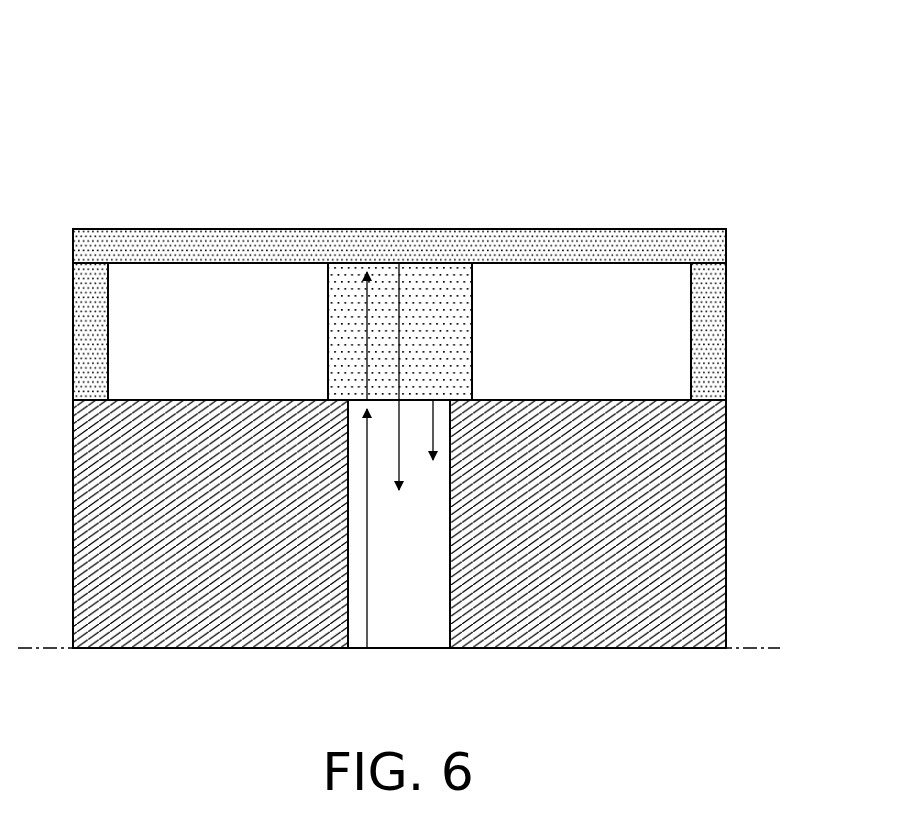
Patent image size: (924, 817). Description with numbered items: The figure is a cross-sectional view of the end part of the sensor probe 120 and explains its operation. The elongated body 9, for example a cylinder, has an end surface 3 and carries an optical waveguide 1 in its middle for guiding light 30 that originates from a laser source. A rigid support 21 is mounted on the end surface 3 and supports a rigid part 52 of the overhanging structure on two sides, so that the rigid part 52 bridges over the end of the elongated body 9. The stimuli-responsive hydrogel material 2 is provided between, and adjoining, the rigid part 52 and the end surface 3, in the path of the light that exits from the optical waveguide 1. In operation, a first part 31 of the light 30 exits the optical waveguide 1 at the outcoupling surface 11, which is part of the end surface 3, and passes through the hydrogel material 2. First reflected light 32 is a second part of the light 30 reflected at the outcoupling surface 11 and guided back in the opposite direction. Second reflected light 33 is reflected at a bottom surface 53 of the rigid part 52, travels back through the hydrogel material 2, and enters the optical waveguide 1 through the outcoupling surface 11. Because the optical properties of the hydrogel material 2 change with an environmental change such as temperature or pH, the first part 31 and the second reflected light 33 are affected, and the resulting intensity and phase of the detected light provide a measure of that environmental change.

The sensor probe 120 is at (140, 82).
The rigid part 52 is at (180, 247).
The bottom surface 53 is at (190, 272).
The rigid support 21 is at (80, 325).
The stimuli-responsive hydrogel material 2 is at (461, 310).
The end surface 3 is at (605, 390).
The outcoupling surface 11 is at (424, 394).
The first part of the light 31 is at (365, 330).
The first reflected light 32 is at (433, 434).
The second reflected light 33 is at (400, 466).
The light 30 is at (370, 607).
The elongated body 9 is at (202, 640).
The optical waveguide 1 is at (423, 640).